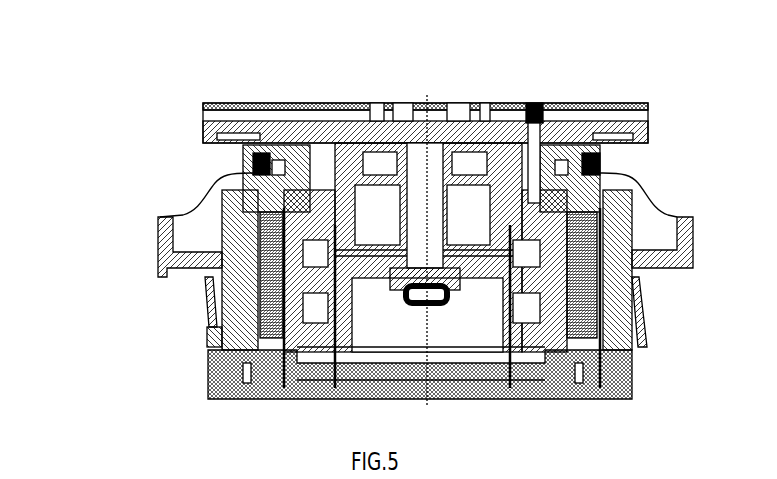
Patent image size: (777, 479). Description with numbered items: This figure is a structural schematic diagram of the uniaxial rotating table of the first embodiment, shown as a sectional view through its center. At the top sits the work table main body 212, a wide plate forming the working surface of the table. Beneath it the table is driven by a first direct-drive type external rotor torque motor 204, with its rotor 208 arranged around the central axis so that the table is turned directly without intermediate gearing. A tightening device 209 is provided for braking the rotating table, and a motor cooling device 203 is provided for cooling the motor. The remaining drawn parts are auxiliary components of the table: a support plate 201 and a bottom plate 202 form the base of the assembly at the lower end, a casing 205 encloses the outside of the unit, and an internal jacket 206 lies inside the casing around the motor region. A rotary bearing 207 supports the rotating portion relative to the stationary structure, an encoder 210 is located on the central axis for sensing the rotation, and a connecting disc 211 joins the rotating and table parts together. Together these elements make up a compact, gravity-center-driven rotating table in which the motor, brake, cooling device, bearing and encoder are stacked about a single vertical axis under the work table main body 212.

The support plate 201 is at (213, 380).
The bottom plate 202 is at (213, 346).
The motor cooling device 203 is at (220, 306).
The first direct-drive type external rotor torque motor 204 is at (160, 245).
The casing 205 is at (222, 245).
The internal jacket 206 is at (257, 185).
The rotary bearing 207 is at (280, 143).
The rotor 208 is at (333, 143).
The tightening device 209 is at (358, 143).
The encoder 210 is at (415, 230).
The connecting disc 211 is at (533, 103).
The work table main body 212 is at (597, 136).